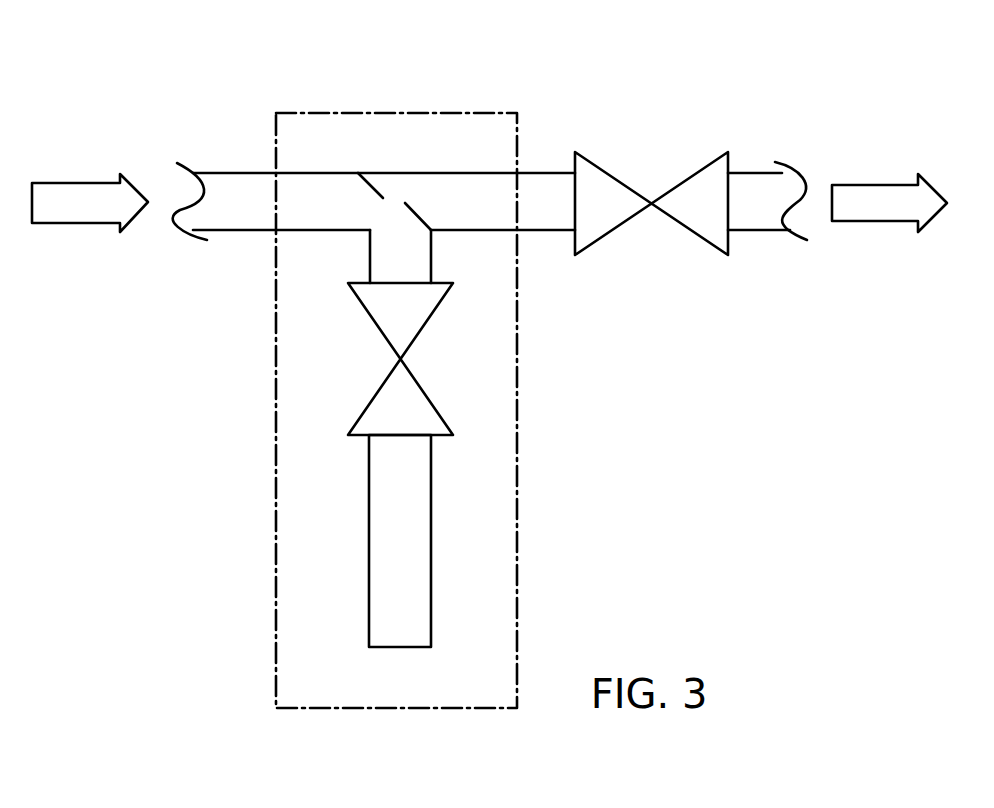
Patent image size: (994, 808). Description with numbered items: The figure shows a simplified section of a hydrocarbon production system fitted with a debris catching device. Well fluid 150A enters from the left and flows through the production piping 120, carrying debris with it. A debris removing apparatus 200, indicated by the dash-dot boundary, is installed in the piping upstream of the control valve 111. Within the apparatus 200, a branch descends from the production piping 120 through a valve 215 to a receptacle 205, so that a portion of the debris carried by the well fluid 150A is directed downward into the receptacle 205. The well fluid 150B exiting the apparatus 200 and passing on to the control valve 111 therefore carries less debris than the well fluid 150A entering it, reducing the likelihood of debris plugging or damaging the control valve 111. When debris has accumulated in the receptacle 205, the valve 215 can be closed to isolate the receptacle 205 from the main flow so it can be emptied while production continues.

The production piping 120 is at (237, 172).
The control valve 111 is at (595, 162).
The debris removing apparatus 200 is at (518, 518).
The valve 215 is at (368, 412).
The receptacle 205 is at (368, 560).
The well fluid 150A is at (90, 203).
The well fluid 150B is at (889, 203).